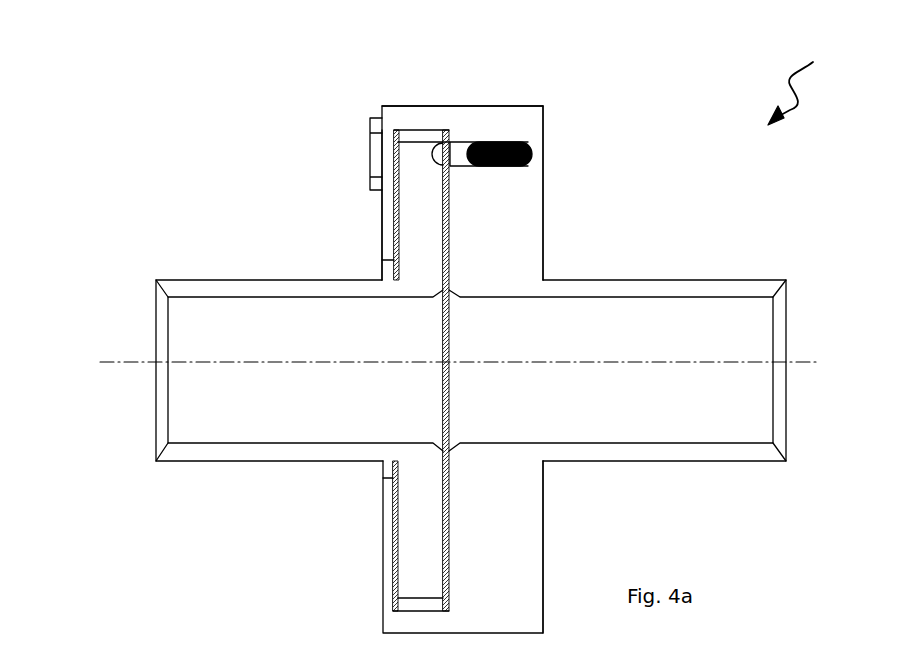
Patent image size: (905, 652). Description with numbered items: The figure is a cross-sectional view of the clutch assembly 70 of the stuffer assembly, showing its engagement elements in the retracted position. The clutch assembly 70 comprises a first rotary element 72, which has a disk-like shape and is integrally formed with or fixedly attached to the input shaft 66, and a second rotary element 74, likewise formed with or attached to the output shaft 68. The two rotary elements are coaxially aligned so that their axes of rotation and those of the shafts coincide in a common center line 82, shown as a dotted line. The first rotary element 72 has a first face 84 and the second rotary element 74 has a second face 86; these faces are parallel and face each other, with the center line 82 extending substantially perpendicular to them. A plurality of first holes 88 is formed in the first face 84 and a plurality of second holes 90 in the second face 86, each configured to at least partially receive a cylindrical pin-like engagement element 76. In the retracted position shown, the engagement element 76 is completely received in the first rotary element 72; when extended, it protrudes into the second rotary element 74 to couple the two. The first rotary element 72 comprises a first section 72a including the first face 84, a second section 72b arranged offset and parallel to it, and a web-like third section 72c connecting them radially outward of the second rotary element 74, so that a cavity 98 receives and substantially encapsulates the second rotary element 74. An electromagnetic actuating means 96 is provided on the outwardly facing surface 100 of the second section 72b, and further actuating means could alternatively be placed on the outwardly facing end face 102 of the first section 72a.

The input shaft 66 is at (162, 315).
The output shaft 68 is at (747, 290).
The clutch assembly 70 is at (808, 83).
The first rotary element 72 is at (522, 188).
The first section 72a is at (522, 188).
The second section 72b is at (388, 230).
The third section 72c is at (420, 118).
The second rotary element 74 is at (382, 108).
The engagement element 76 is at (503, 141).
The center line 82 is at (800, 362).
The first face 84 is at (448, 212).
The second face 86 is at (448, 212).
The first holes 88 is at (459, 148).
The second holes 90 is at (431, 148).
The actuating means 96 is at (370, 120).
The cavity 98 is at (410, 607).
The outwardly facing surface 100 is at (382, 202).
The outwardly facing end face 102 is at (543, 230).